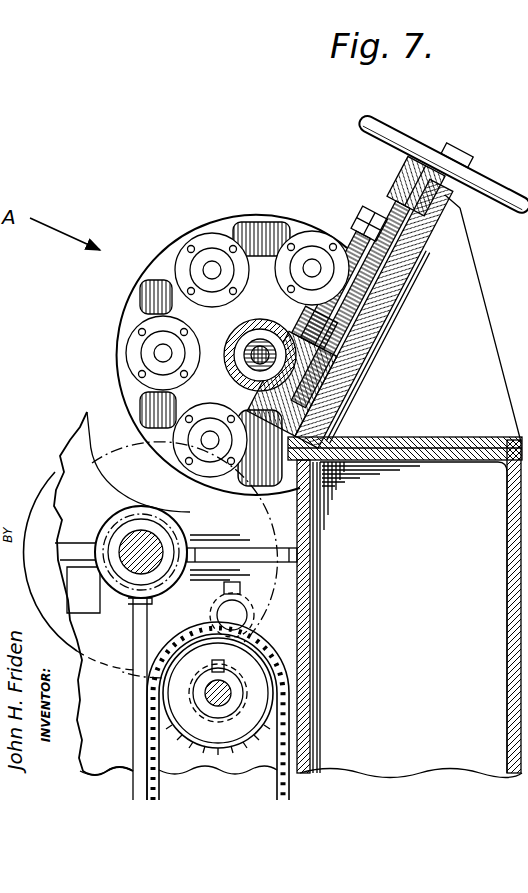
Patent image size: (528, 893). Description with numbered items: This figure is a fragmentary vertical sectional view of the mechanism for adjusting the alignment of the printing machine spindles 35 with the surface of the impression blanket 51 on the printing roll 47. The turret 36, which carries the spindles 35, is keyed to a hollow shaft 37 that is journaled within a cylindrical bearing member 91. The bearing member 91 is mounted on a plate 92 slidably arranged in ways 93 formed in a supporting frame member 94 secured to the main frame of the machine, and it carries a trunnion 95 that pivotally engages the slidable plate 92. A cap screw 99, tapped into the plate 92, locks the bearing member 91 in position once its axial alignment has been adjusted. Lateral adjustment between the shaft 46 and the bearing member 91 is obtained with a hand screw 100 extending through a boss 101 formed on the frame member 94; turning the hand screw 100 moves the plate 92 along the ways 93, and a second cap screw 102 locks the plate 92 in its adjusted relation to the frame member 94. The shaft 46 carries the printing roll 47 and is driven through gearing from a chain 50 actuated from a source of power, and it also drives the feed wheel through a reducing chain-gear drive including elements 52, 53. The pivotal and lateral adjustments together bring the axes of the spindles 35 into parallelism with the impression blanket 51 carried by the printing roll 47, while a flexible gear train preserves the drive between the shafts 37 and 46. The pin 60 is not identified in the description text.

The spindles 35 is at (212, 270).
The turret 36 is at (243, 222).
The hollow shaft 37 is at (247, 342).
The shaft 46 is at (130, 540).
The printing roll 47 is at (52, 498).
The chain 50 is at (275, 782).
The impression blanket 51 is at (56, 462).
The reducing chain-gear drive element 52 is at (121, 584).
The reducing chain-gear drive element 53 is at (160, 633).
The shaft 60 is at (258, 357).
The cylindrical bearing member 91 is at (315, 327).
The plate 92 is at (336, 288).
The ways 93 is at (340, 436).
The supporting frame member 94 is at (377, 315).
The trunnion 95 is at (292, 383).
The cap screw 99 is at (350, 304).
The hand screw 100 is at (416, 186).
The boss 101 is at (442, 159).
The cap screw 102 is at (369, 223).